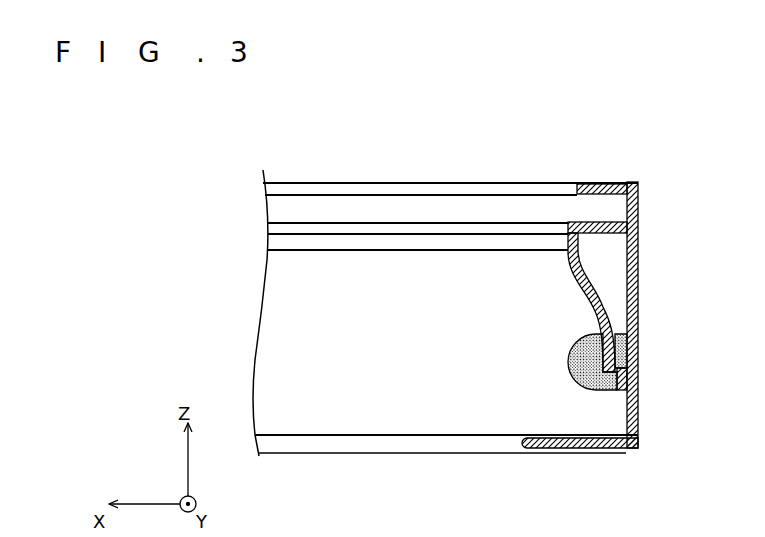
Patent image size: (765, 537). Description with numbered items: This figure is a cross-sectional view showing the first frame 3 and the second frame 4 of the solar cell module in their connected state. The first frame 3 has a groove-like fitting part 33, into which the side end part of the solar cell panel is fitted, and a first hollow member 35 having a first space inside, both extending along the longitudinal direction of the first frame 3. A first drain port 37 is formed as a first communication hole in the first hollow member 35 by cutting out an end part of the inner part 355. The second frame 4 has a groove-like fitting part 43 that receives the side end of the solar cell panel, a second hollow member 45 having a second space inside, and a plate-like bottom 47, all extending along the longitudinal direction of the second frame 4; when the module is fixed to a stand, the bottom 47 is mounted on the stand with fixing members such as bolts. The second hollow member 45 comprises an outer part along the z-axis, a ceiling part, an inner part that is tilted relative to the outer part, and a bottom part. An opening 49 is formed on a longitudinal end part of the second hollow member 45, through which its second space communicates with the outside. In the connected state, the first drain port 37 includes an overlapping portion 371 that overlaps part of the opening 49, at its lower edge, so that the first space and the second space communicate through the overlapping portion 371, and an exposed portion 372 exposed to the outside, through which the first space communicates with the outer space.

The first frame 3 is at (414, 289).
The fitting part 33 is at (280, 208).
The inner part 355 is at (229, 313).
The first hollow member 35 is at (265, 302).
The second frame 4 is at (604, 316).
The fitting part 43 is at (585, 207).
The second hollow member 45 is at (572, 278).
The bottom 47 is at (582, 448).
The opening 49 is at (608, 278).
The first drain port 37 is at (560, 361).
The overlapping portion 371 is at (626, 345).
The exposed portion 372 is at (620, 385).